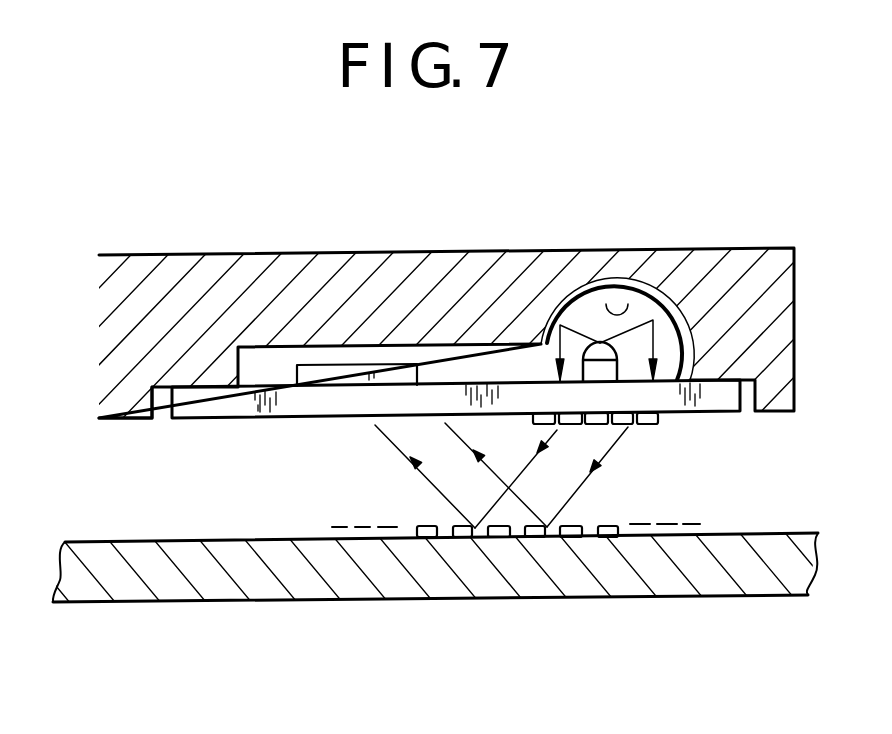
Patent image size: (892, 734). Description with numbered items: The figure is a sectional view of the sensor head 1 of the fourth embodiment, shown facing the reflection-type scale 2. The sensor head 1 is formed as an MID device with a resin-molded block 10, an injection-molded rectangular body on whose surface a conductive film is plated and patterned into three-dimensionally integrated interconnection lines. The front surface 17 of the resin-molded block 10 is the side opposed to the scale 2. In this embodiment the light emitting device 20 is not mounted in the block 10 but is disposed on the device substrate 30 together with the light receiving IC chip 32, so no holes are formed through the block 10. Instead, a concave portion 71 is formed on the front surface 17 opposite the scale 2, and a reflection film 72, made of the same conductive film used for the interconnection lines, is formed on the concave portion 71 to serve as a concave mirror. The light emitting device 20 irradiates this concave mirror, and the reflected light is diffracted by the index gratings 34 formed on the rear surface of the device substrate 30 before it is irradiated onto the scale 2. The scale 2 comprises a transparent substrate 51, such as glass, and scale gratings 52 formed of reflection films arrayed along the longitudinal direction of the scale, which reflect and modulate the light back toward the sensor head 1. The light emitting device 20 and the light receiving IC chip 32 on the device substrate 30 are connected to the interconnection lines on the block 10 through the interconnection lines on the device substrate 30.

The sensor head 1 is at (290, 222).
The resin-molded block 10 is at (782, 288).
The front surface 17 is at (120, 423).
The light emitting device 20 is at (599, 343).
The device substrate 30 is at (222, 397).
The light receiving IC chip 32 is at (312, 376).
The index gratings 34 is at (655, 418).
The transparent substrate 51 is at (263, 585).
The scale gratings 52 is at (608, 524).
The concave portion 71 is at (578, 299).
The reflection film 72 is at (638, 296).
The reflection-type scale 2 is at (692, 598).